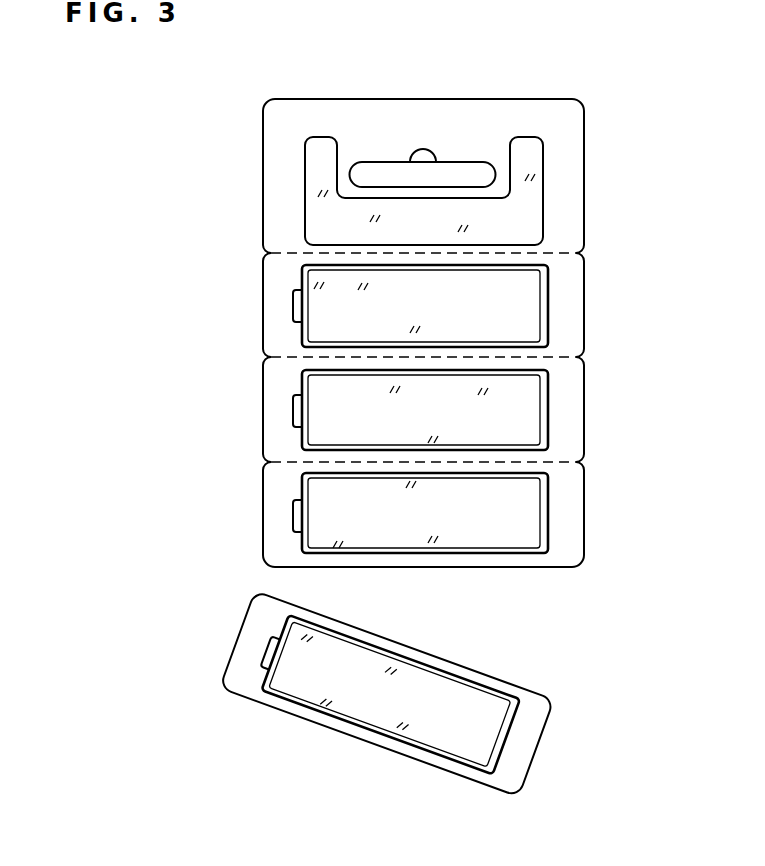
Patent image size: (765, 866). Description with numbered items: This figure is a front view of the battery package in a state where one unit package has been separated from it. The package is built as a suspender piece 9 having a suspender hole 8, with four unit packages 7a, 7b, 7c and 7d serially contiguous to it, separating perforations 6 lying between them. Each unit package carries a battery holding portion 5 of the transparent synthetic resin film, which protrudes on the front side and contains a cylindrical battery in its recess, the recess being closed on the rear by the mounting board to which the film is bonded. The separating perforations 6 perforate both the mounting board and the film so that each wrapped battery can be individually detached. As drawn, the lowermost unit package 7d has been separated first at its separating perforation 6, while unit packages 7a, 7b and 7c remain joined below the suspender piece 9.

The battery holding portion 5 is at (300, 290).
The separating perforation 6 is at (295, 357).
The unit package 7a is at (573, 288).
The unit package 7b is at (572, 400).
The unit package 7c is at (568, 520).
The lowermost unit package 7d is at (530, 735).
The suspender hole 8 is at (421, 172).
The suspender piece 9 is at (572, 148).